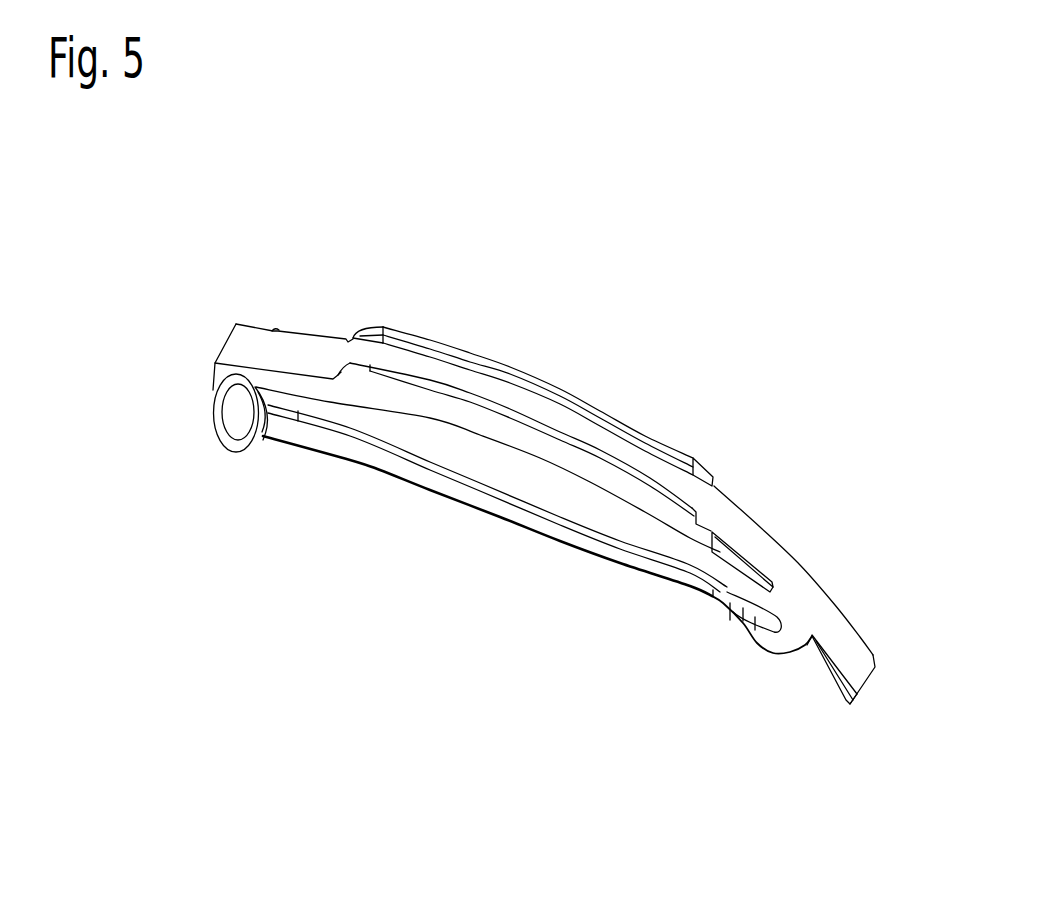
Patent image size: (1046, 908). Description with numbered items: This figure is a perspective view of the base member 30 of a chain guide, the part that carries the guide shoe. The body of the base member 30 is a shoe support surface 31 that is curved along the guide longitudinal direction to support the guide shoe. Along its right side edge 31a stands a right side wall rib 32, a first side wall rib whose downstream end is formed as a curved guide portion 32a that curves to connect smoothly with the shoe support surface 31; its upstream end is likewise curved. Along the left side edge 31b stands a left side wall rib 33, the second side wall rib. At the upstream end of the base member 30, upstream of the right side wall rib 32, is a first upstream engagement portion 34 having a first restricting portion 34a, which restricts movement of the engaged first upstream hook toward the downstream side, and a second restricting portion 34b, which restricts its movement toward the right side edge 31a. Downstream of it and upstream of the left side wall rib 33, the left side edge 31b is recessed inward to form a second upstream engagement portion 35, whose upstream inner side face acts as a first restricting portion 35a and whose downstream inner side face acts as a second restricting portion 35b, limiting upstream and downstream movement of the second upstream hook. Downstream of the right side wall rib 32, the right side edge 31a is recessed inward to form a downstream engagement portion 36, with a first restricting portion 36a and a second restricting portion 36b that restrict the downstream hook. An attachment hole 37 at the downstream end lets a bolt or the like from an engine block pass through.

The base member 30 is at (158, 233).
The shoe support surface 31 is at (725, 510).
The right side edge 31a is at (477, 343).
The left side edge 31b is at (443, 413).
The right side wall rib 32 is at (592, 400).
The curved guide portion 32a is at (374, 323).
The left side wall rib 33 is at (568, 450).
The first upstream engagement portion 34 is at (855, 717).
The first restricting portion 34a is at (863, 677).
The second restricting portion 34b is at (828, 668).
The second upstream engagement portion 35 is at (727, 540).
The first restricting portion 35a is at (741, 565).
The second restricting portion 35b is at (712, 565).
The downstream engagement portion 36 is at (312, 324).
The first restricting portion 36a is at (343, 323).
The second restricting portion 36b is at (280, 327).
The attachment hole 37 is at (240, 415).